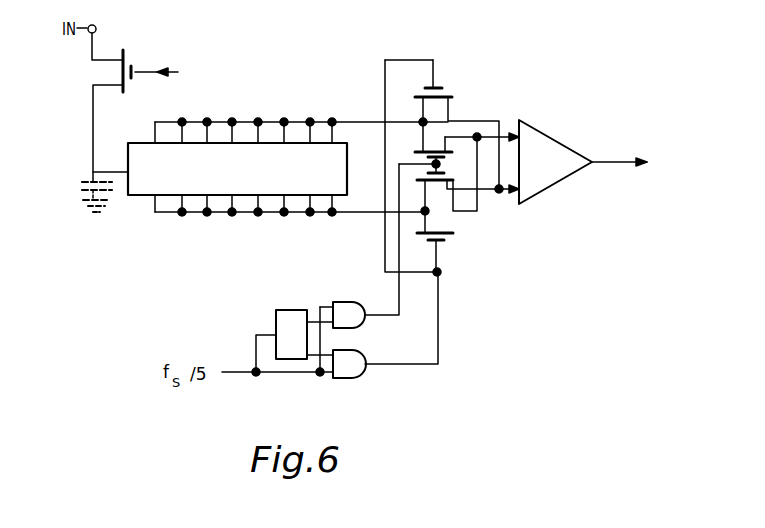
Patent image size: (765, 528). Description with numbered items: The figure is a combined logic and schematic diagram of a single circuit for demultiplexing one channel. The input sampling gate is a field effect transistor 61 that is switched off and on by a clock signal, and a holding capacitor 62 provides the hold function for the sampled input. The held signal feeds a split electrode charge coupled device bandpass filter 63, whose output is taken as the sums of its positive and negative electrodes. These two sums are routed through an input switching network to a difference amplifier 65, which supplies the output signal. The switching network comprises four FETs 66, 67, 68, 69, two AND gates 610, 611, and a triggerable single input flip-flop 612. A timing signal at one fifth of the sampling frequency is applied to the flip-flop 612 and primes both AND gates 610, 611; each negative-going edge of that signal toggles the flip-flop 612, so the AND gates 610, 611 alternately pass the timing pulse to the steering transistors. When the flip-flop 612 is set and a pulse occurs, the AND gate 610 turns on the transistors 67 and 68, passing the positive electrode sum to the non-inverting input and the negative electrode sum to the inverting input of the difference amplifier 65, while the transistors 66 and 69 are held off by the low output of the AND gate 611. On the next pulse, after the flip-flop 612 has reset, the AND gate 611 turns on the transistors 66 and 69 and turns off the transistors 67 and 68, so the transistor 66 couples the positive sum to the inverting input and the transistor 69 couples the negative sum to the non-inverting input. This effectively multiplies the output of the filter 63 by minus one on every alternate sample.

The field effect transistor 61 is at (123, 50).
The holding capacitor 62 is at (83, 185).
The split electrode charge coupled device bandpass filter 63 is at (347, 166).
The difference amplifier 65 is at (545, 191).
The FET 66 is at (453, 96).
The FET 67 is at (418, 151).
The FET 68 is at (437, 181).
The FET 69 is at (453, 233).
The AND gate 610 is at (348, 302).
The AND gate 611 is at (360, 377).
The triggerable single input flip-flop 612 is at (293, 309).